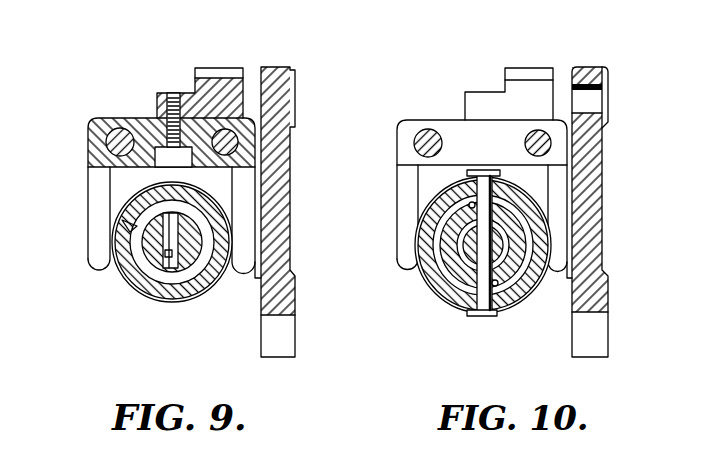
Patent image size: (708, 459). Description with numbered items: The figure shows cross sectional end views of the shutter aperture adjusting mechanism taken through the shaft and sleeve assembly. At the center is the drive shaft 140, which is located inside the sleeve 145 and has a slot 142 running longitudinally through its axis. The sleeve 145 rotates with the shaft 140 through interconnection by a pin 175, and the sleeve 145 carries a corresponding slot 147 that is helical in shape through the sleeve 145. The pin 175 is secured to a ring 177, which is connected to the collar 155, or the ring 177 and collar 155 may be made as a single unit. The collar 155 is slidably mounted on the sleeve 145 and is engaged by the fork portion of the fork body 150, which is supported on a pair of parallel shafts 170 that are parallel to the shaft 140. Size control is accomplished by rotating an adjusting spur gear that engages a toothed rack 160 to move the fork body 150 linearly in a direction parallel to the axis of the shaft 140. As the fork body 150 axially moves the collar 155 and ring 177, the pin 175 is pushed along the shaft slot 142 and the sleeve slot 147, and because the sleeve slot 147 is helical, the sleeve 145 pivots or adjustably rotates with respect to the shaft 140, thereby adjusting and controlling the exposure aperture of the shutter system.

In FIG. 9, the shaft 140 is at (203, 288).
In FIG. 10, the shaft 140 is at (520, 282).
In FIG. 9, the slot 142 is at (165, 262).
In FIG. 9, the sleeve 145 is at (175, 280).
In FIG. 10, the sleeve 145 is at (458, 268).
In FIG. 9, the slot 147 is at (137, 233).
In FIG. 10, the slot 147 is at (468, 204).
In FIG. 9, the fork body 150 is at (100, 222).
In FIG. 10, the fork body 150 is at (405, 214).
In FIG. 9, the collar 155 is at (163, 300).
In FIG. 10, the collar 155 is at (437, 300).
In FIG. 9, the toothed rack 160 is at (214, 74).
In FIG. 10, the toothed rack 160 is at (527, 72).
In FIG. 9, the parallel shafts 170 is at (117, 136).
In FIG. 10, the parallel shafts 170 is at (424, 139).
In FIG. 10, the pin 175 is at (477, 300).
In FIG. 10, the ring 177 is at (430, 277).